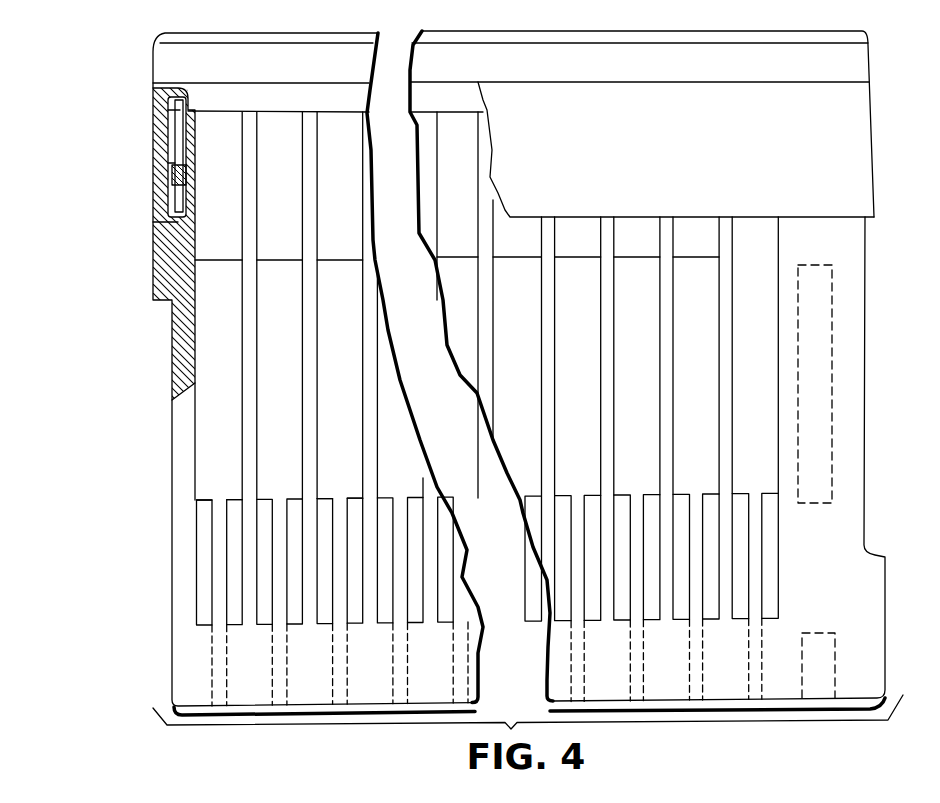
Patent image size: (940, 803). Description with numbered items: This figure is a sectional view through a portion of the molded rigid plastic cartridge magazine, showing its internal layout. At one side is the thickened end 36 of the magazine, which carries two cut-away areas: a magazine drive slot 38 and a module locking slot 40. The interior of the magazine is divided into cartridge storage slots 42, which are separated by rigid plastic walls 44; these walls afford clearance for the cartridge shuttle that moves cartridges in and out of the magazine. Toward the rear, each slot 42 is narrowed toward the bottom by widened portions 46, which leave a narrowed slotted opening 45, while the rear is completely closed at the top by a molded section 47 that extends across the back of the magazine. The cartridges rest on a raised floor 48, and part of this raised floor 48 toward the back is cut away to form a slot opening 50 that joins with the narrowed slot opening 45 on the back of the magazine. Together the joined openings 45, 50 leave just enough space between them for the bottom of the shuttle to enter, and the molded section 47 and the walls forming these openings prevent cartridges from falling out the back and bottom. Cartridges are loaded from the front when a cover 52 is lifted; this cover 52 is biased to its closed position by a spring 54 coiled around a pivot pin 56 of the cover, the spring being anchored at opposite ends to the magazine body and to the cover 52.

The thickened end 36 is at (847, 378).
The magazine drive slot 38 is at (813, 645).
The module locking slot 40 is at (810, 262).
The cartridge storage slots 42 is at (340, 408).
The rigid plastic walls 44 is at (315, 327).
The narrowed slotted opening 45 is at (283, 543).
The widened portions 46 is at (231, 507).
The molded section 47 is at (290, 215).
The raised floor 48 is at (207, 627).
The slot opening 50 is at (393, 648).
The cover 52 is at (853, 138).
The spring 54 is at (157, 122).
The pivot pin 56 is at (153, 183).